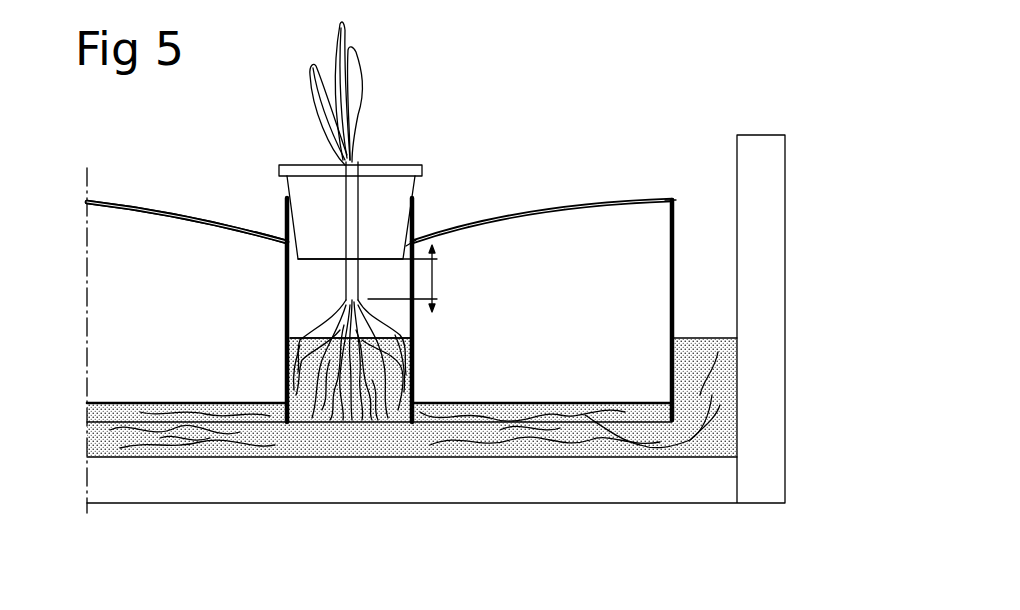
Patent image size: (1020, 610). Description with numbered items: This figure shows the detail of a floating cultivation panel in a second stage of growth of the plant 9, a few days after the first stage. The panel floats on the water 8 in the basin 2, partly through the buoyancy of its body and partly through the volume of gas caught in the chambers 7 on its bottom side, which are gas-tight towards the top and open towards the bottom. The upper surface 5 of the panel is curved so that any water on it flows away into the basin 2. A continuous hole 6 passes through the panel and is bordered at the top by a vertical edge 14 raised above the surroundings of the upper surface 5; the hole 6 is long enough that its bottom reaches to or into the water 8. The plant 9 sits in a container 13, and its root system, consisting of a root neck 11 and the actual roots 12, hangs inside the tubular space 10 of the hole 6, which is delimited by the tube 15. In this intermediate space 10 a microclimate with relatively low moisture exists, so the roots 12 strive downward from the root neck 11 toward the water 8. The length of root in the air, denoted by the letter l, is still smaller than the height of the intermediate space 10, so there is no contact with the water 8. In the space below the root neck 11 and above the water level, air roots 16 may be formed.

The basin 2 is at (768, 165).
The upper surface 5 is at (155, 210).
The hole 6 is at (413, 245).
The chamber 7 is at (593, 230).
The water 8 is at (702, 339).
The plant 9 is at (357, 68).
The tubular space 10 is at (307, 307).
The root neck 11 is at (338, 172).
The roots 12 is at (415, 336).
The container 13 is at (382, 188).
The vertical edge 14 is at (287, 218).
The tube 15 is at (290, 323).
The air roots 16 is at (372, 275).